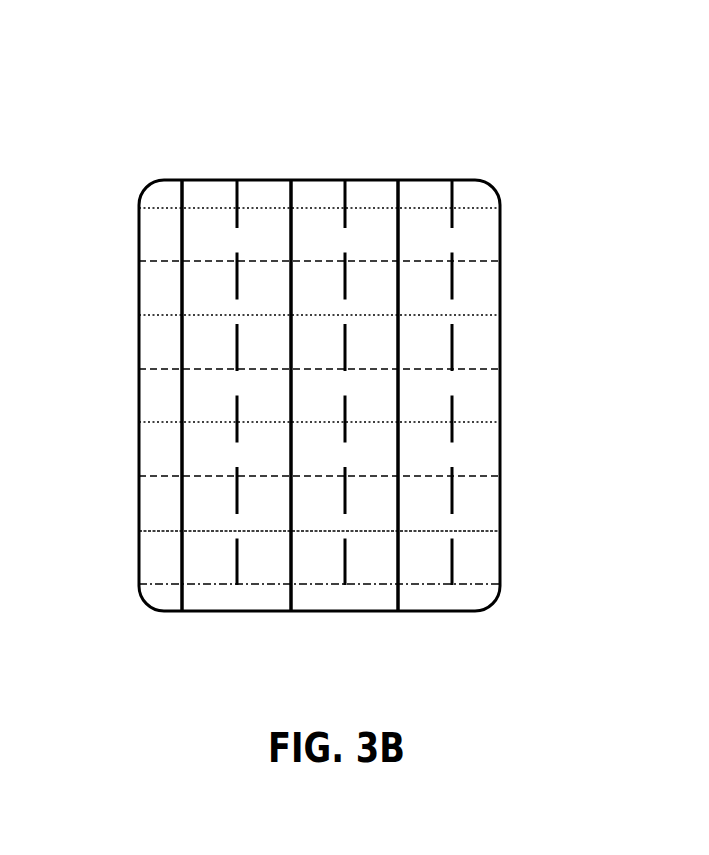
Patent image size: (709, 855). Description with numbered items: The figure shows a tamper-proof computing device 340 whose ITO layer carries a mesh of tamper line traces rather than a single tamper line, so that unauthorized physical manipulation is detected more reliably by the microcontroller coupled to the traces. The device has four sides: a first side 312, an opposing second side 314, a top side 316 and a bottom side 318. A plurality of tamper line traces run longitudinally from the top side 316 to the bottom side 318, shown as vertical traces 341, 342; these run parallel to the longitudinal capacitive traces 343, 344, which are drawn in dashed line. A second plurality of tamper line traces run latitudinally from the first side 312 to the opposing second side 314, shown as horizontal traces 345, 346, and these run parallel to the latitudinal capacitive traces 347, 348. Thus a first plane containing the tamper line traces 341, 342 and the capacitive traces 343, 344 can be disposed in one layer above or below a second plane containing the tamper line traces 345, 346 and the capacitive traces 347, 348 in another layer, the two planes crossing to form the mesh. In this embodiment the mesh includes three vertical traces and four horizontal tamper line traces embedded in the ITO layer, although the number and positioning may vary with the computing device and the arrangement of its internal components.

The tamper-proof computing device 340 is at (392, 105).
The top side 316 is at (232, 177).
The opposing second side 314 is at (503, 503).
The bottom side 318 is at (250, 612).
The first side 312 is at (138, 465).
The vertical tamper line trace 341 is at (402, 233).
The vertical tamper line trace 342 is at (292, 298).
The longitudinal capacitive trace 343 is at (455, 355).
The longitudinal capacitive trace 344 is at (349, 412).
The horizontal tamper line trace 345 is at (212, 213).
The latitudinal capacitive trace 347 is at (210, 263).
The horizontal tamper line trace 346 is at (205, 317).
The latitudinal capacitive trace 348 is at (202, 372).